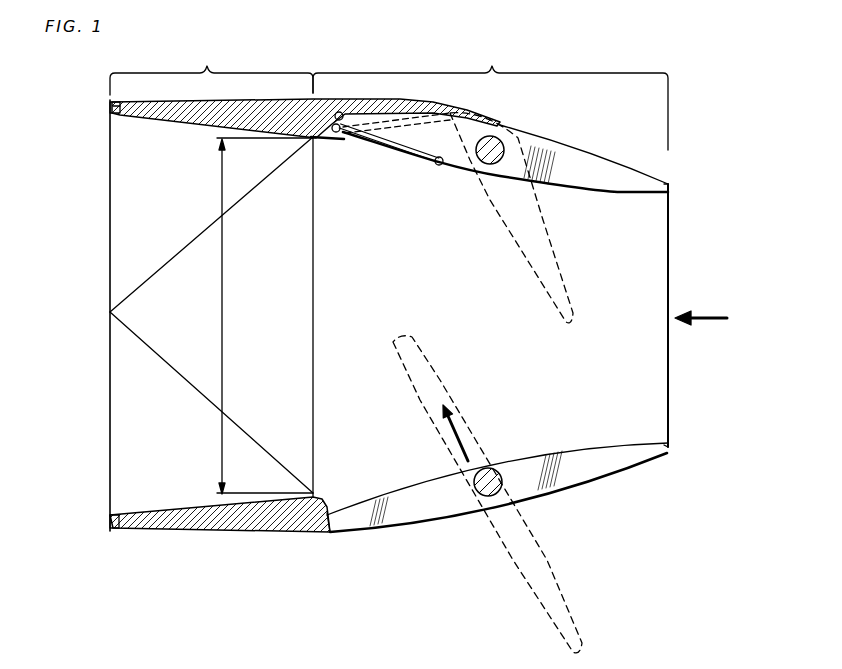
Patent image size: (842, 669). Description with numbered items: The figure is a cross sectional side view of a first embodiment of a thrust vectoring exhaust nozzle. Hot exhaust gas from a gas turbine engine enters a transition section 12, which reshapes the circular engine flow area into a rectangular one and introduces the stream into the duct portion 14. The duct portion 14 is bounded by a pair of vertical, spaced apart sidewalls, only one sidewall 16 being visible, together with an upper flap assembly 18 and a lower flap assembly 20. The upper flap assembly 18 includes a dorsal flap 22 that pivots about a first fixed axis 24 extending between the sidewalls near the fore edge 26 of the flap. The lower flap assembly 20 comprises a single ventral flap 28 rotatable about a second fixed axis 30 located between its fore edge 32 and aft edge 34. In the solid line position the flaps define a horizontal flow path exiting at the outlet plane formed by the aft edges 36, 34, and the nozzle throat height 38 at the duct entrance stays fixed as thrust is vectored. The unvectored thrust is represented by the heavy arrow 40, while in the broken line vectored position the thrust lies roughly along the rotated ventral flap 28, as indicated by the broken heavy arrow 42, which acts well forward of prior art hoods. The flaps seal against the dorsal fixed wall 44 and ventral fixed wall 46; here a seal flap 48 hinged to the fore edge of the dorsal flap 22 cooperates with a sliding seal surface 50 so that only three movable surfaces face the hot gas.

The transition section 12 is at (211, 72).
The duct portion 14 is at (490, 100).
The sidewall 16 is at (357, 310).
The upper flap assembly 18 is at (555, 209).
The lower flap assembly 20 is at (487, 494).
The dorsal flap 22 is at (581, 189).
The first fixed axis 24 is at (497, 145).
The fore edge 26 is at (441, 166).
The ventral flap 28 is at (605, 474).
The second fixed axis 30 is at (494, 470).
The fore edge 32 is at (333, 535).
The aft edge 34 is at (670, 449).
The aft edge 36 is at (671, 185).
The nozzle throat height 38 is at (223, 297).
The thrust vector arrow 40 is at (701, 315).
The vectored thrust vector arrow 42 is at (447, 440).
The dorsal fixed wall 44 is at (384, 99).
The ventral fixed wall 46 is at (291, 535).
The seal flap 48 is at (375, 151).
The sliding seal surface 50 is at (337, 133).